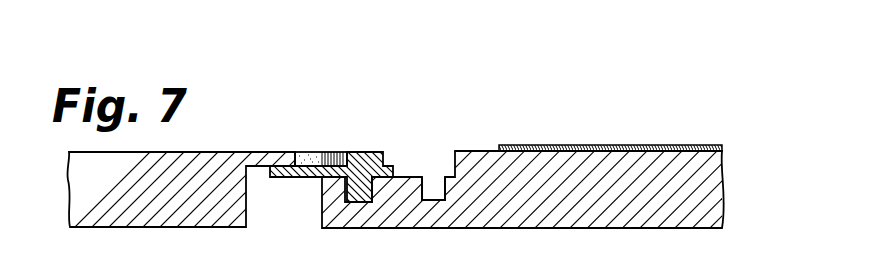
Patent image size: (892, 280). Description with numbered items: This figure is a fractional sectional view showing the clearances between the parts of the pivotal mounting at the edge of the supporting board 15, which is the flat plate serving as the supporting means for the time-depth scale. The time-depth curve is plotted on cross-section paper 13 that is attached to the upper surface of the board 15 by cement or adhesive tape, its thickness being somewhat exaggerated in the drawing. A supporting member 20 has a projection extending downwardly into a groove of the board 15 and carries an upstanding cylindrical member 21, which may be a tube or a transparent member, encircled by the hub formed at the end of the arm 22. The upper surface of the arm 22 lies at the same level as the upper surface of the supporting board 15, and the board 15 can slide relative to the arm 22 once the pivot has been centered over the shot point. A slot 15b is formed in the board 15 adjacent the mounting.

The cross-section paper 13 is at (586, 145).
The supporting board 15 is at (639, 217).
The slot in body block 15b is at (432, 199).
The supporting member 20 is at (393, 166).
The cylindrical member 21 is at (323, 151).
The arm 22 is at (187, 222).